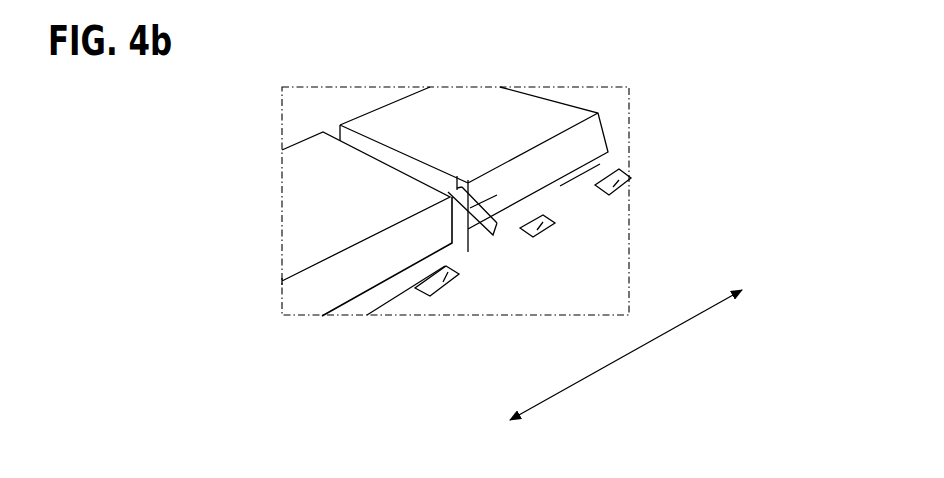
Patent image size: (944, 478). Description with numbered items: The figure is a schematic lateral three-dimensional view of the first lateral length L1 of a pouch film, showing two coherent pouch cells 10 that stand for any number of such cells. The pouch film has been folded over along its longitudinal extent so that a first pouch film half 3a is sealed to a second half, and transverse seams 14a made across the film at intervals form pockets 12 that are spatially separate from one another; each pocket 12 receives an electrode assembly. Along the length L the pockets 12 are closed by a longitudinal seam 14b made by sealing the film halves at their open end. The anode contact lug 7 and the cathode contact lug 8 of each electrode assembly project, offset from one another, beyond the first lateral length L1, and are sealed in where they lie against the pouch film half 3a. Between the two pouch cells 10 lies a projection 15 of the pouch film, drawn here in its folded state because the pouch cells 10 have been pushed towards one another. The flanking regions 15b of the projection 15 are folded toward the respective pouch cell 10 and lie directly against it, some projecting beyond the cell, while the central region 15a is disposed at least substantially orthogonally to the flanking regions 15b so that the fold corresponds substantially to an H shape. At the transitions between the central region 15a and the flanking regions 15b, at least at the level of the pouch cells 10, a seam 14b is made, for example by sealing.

The pouch cell 10 is at (288, 163).
The pocket 12 is at (320, 232).
The first pouch film half 3a is at (362, 305).
The anode contact lug 7 is at (448, 288).
The cathode contact lug 8 is at (545, 225).
The transverse seam 14a is at (612, 152).
The longitudinal seam 14b is at (562, 192).
The projection 15 is at (481, 248).
The central region 15a is at (457, 192).
The flanking region 15b is at (375, 147).
The length L is at (626, 355).
The first lateral length L1 is at (410, 293).